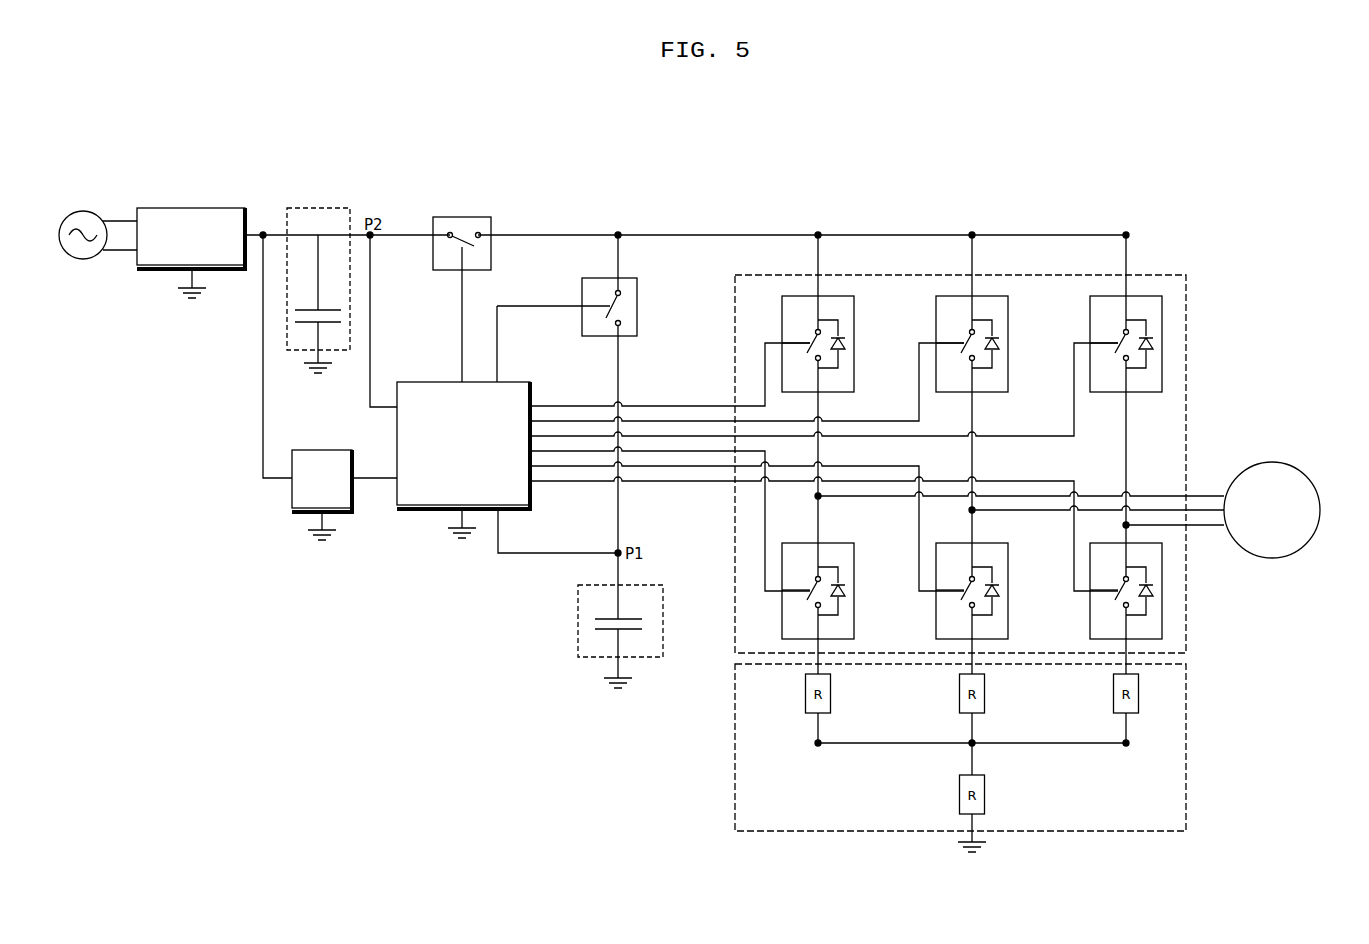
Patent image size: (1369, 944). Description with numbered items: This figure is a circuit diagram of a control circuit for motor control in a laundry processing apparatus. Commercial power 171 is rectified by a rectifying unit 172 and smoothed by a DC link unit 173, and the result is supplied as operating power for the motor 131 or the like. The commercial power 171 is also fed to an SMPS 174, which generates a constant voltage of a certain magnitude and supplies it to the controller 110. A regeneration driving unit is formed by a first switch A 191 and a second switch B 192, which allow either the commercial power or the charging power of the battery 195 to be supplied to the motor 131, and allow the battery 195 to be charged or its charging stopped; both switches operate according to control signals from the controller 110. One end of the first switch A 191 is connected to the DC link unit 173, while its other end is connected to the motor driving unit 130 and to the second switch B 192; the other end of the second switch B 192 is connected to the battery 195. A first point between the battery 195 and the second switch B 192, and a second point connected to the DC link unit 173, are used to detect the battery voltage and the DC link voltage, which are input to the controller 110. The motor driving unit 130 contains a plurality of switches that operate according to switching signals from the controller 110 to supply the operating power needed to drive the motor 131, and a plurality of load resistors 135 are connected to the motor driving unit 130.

The controller 110 is at (525, 381).
The motor driving unit 130 is at (1175, 275).
The motor 131 is at (1305, 472).
The load resistors 135 is at (1186, 702).
The commercial power 171 is at (78, 212).
The rectifying unit 172 is at (173, 208).
The DC link unit 173 is at (331, 208).
The SMPS 174 is at (326, 450).
The first switch A 191 is at (471, 216).
The second switch B 192 is at (637, 300).
The battery 195 is at (650, 657).